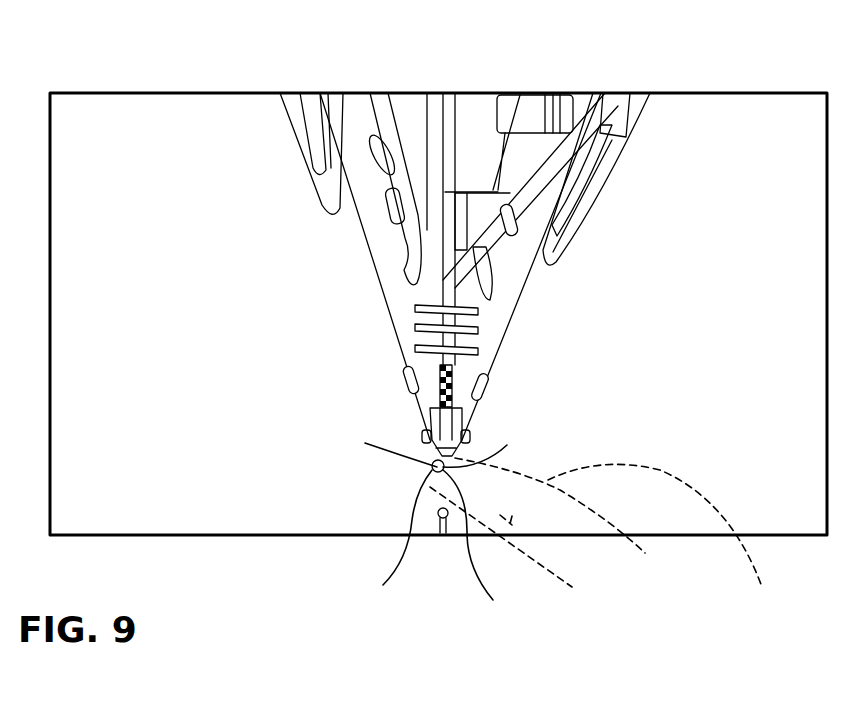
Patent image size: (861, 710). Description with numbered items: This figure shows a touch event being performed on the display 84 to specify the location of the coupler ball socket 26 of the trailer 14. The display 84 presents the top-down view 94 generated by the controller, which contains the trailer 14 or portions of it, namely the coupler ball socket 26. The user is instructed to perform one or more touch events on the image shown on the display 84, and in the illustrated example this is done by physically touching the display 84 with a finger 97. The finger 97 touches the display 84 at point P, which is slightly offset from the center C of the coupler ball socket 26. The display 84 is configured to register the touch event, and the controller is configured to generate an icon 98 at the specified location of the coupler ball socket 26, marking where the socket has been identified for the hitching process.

The display 84 is at (270, 97).
The top-down view 94 is at (538, 75).
The trailer 14 is at (617, 227).
The icon 98 is at (392, 537).
The coupler ball socket 26 is at (472, 551).
The finger 97 is at (605, 539).
The point P is at (388, 448).
The center C is at (479, 443).